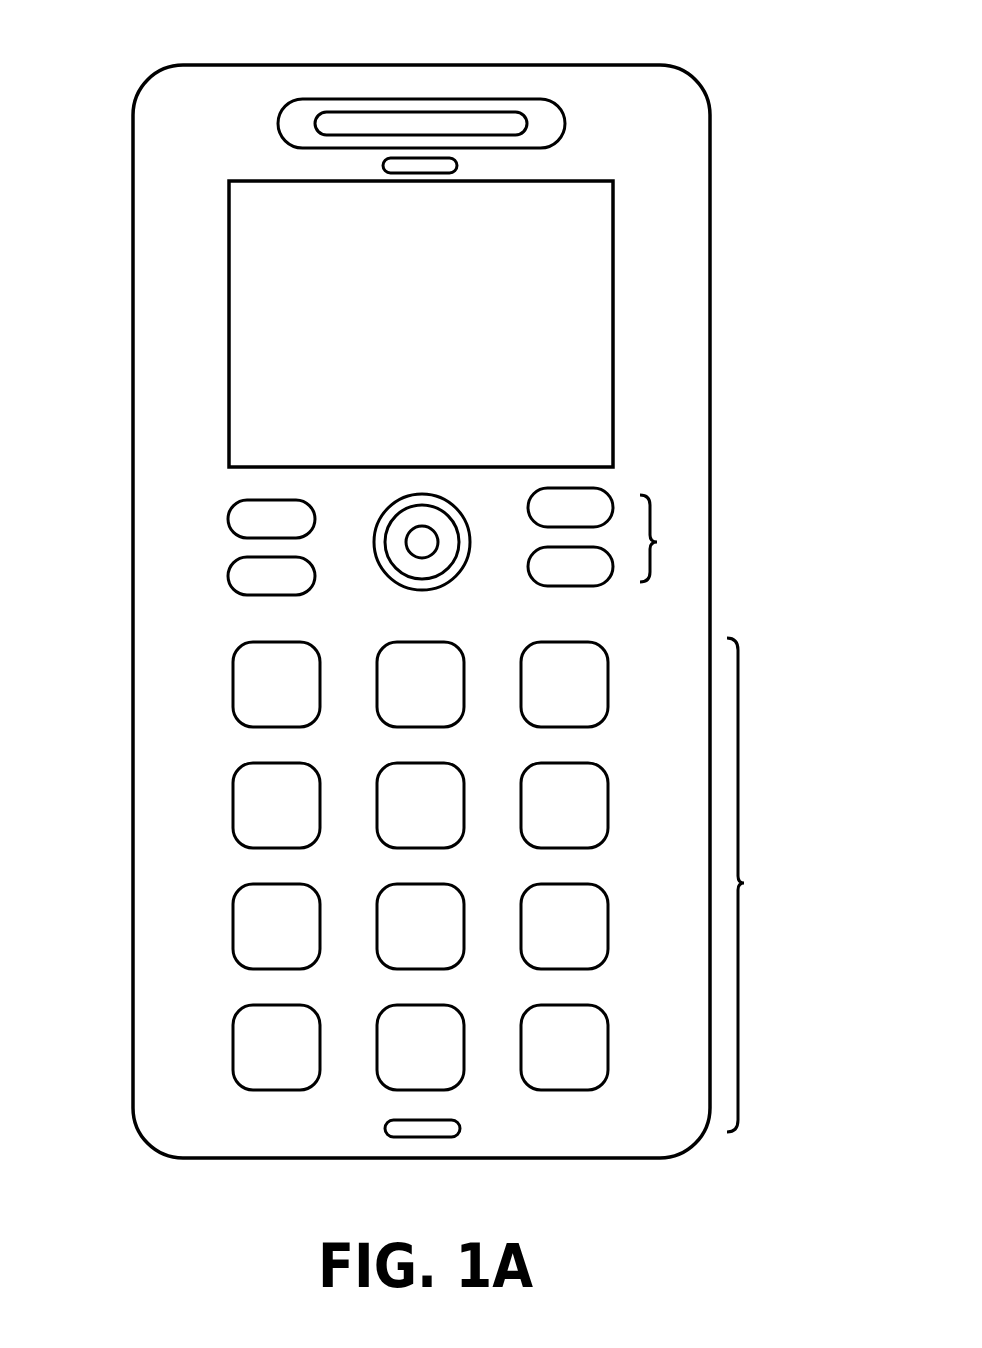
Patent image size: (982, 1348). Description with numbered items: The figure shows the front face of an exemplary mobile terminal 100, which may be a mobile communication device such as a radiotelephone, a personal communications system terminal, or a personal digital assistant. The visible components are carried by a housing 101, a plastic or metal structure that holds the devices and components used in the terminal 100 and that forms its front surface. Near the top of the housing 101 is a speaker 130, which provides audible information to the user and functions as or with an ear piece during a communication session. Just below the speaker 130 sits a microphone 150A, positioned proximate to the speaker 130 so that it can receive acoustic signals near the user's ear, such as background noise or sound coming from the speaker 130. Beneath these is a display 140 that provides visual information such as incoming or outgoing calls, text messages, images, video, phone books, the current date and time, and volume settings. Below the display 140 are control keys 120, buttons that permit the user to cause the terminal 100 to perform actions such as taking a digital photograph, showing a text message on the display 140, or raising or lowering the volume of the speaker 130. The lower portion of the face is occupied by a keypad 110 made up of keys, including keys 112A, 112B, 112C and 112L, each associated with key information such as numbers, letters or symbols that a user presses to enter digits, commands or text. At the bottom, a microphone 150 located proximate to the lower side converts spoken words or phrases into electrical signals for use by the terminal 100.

The mobile terminal 100 is at (452, 579).
The housing 101 is at (382, 611).
The keypad 110 is at (541, 858).
The key 112A is at (318, 655).
The key 112B is at (451, 655).
The key 112C is at (598, 658).
The key 112L is at (608, 1021).
The control keys 120 is at (506, 541).
The speaker 130 is at (476, 113).
The display 140 is at (421, 324).
The microphone 150 is at (367, 1131).
The microphone 150A is at (406, 197).